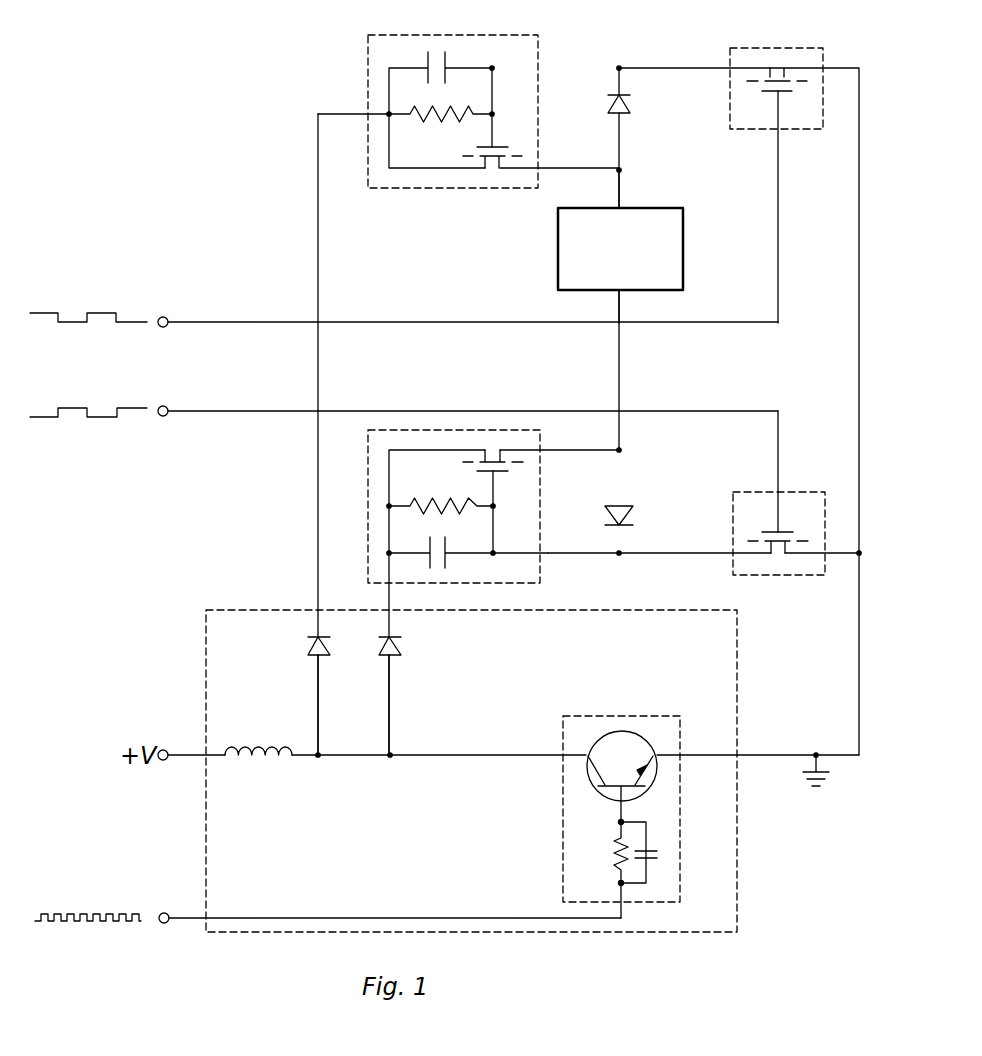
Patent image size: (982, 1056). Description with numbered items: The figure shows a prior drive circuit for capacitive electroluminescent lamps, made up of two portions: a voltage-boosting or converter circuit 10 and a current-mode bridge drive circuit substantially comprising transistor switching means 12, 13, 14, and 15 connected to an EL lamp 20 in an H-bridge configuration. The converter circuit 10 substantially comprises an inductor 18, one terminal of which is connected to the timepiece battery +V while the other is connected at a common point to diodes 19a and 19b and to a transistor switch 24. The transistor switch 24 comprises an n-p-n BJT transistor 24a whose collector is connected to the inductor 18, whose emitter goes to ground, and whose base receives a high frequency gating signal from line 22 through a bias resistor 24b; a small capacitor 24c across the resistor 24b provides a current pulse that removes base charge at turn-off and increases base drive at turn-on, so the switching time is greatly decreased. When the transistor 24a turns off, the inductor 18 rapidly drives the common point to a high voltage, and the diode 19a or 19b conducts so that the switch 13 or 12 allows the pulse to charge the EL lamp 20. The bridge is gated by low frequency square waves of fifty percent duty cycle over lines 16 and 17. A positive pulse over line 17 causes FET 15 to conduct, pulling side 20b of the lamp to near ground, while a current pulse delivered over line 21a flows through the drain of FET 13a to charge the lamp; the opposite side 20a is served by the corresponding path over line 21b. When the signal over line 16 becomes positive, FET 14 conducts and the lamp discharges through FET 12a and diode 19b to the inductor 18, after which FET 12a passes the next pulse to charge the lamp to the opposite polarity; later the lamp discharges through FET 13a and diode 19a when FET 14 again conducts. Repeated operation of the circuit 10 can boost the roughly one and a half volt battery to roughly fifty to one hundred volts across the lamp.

The voltage-boosting circuit 10 is at (206, 675).
The transistor switching means 12 is at (369, 496).
The FET 12a is at (505, 474).
The transistor switching means 13 is at (368, 50).
The FET 13a is at (499, 145).
The FET 14 is at (782, 95).
The FET 15 is at (789, 530).
The line 16 is at (263, 322).
The line 17 is at (253, 411).
The inductor 18 is at (273, 756).
The diode 19a is at (306, 649).
The diode 19b is at (400, 650).
The EL lamp 20 is at (620, 249).
The side of the EL lamp 20a is at (621, 208).
The side of the EL lamp 20b is at (620, 290).
The line 21a is at (318, 703).
The line 21b is at (390, 706).
The line 22 is at (192, 918).
The transistor switch 24 is at (654, 903).
The transistor 24a is at (590, 783).
The bias resistor 24b is at (616, 842).
The capacitor 24c is at (650, 848).